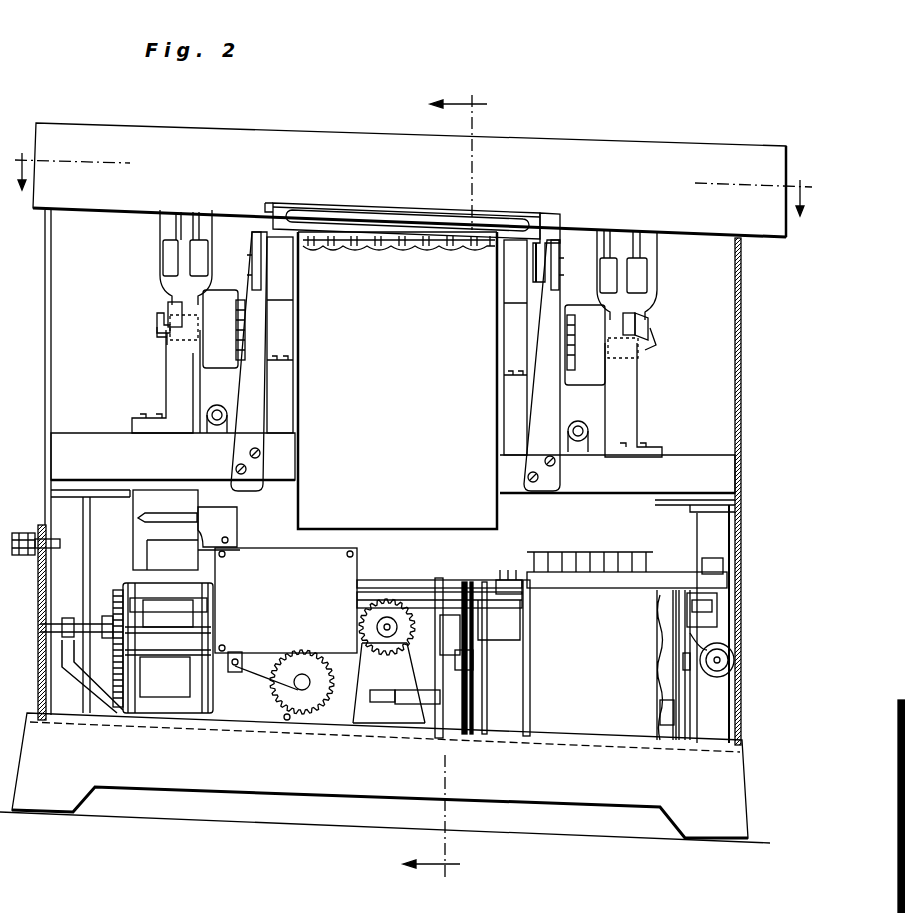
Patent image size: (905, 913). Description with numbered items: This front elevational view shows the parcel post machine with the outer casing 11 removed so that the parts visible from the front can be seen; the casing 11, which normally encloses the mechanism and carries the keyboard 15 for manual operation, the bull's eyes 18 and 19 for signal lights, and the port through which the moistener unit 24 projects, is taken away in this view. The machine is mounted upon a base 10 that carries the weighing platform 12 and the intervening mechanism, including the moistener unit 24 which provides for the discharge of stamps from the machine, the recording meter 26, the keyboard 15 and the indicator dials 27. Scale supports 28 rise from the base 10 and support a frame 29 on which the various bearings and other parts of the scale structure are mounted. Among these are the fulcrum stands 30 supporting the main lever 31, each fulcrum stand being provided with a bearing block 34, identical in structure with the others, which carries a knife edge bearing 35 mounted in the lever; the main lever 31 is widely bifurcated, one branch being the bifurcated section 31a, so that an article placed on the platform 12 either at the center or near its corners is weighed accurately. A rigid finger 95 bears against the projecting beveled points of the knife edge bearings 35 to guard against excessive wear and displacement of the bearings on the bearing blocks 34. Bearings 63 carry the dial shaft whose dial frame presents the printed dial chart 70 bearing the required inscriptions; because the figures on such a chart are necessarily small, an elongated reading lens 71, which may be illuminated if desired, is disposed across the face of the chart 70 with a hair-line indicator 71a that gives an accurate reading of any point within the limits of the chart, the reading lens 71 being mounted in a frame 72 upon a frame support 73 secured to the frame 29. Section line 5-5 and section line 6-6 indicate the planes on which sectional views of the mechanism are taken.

The section line 5- 5 is at (453, 486).
The section line 6- 6 is at (412, 174).
The base 10 is at (205, 780).
The outer casing 11 is at (45, 322).
The weighing platform 12 is at (60, 130).
The keyboard 15 is at (572, 722).
The bull's eye 18 is at (214, 428).
The bull's eye 19 is at (580, 443).
The moistener unit 24 is at (158, 700).
The recording meter 26 is at (345, 566).
The indicator dials 27 is at (512, 580).
The scale supports 28 is at (65, 507).
The frame 29 is at (66, 440).
The fulcrum stands 30 is at (178, 368).
The main lever 31 is at (282, 320).
The bifurcated section 31a is at (404, 351).
The bearing blocks 34 is at (178, 322).
The knife edge bearings 35 is at (167, 304).
The bearings 63 is at (278, 442).
The printed dial chart 70 is at (489, 513).
The elongated reading lens 71 is at (411, 210).
The hair-line indicator 71a is at (338, 228).
The frame 72 is at (545, 234).
The frame support 73 is at (253, 293).
The rigid finger 95 is at (160, 336).